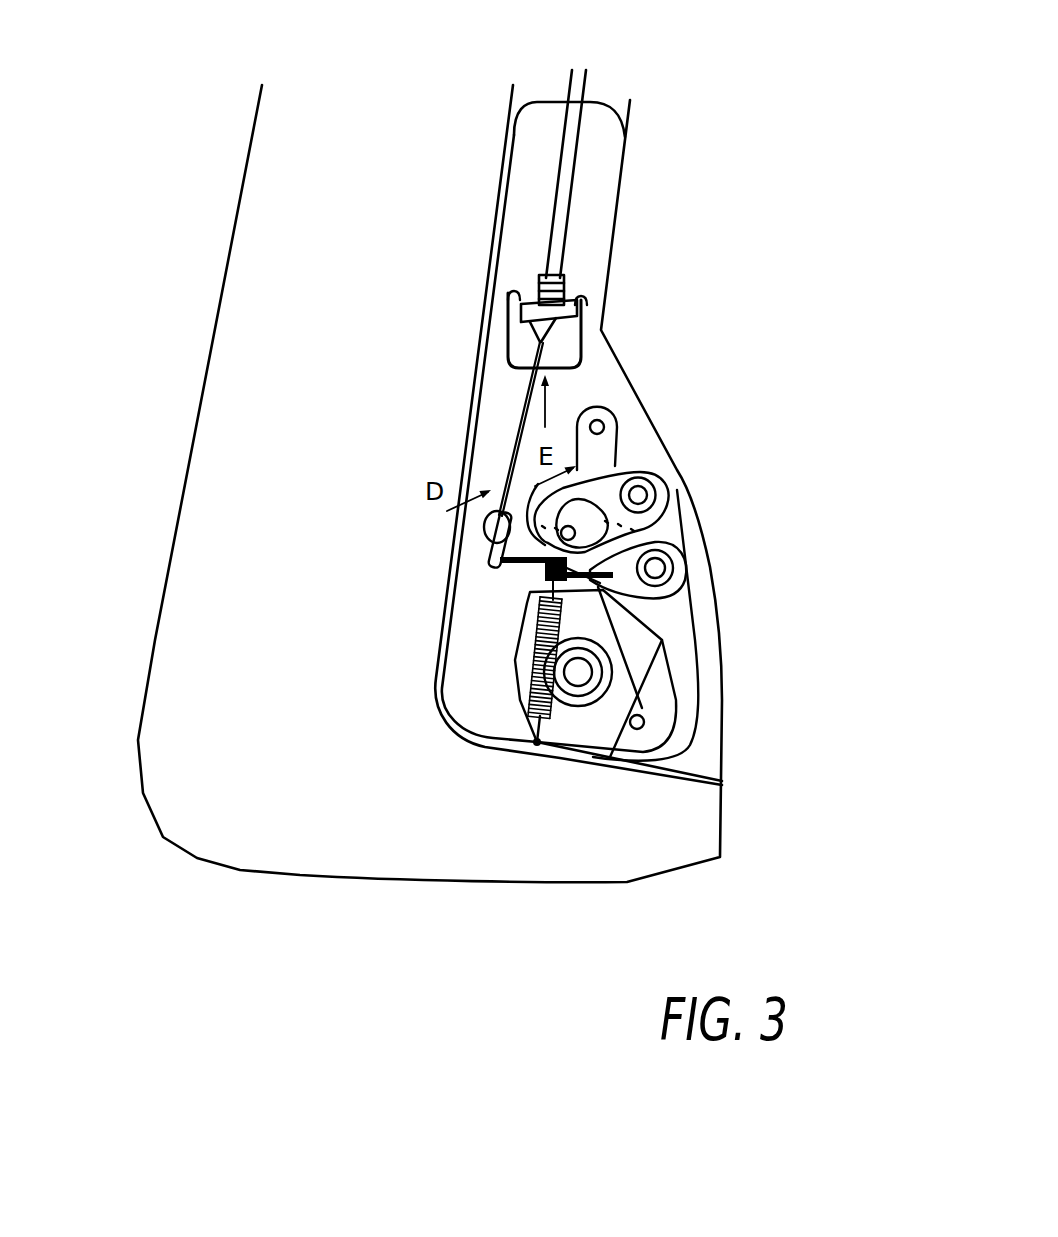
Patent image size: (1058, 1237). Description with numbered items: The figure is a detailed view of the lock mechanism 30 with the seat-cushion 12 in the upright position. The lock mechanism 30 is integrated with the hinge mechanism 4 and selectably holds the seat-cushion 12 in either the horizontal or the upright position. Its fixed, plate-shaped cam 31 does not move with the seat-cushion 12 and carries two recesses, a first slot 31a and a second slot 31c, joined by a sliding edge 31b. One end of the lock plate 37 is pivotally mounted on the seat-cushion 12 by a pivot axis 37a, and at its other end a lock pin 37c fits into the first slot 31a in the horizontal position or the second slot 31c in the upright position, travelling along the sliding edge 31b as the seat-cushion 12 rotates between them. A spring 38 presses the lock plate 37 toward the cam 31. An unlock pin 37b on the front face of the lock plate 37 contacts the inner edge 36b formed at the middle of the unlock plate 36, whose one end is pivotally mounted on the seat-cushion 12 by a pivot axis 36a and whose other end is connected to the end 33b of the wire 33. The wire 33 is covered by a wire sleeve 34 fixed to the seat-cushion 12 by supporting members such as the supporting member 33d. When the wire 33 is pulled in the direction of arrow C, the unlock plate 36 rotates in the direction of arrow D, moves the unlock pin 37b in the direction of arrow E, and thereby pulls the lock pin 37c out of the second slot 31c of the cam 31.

The hinge mechanism 4 is at (735, 388).
The seat-cushion 12 is at (237, 338).
The lock mechanism 30 is at (460, 245).
The cam 31 is at (530, 602).
The first slot 31a is at (648, 710).
The sliding edge 31b is at (665, 633).
The second slot 31c is at (547, 576).
The wire 33 is at (520, 396).
The end of the wire 33b is at (493, 562).
The supporting member 33d is at (587, 317).
The wire sleeve 34 is at (568, 163).
The unlock plate 36 is at (660, 510).
The pivot axis 36a is at (674, 478).
The inner edge 36b is at (608, 538).
The lock plate 37 is at (698, 606).
The pivot axis 37a is at (676, 578).
The unlock pin 37b is at (545, 540).
The lock pin 37c is at (665, 690).
The spring 38 is at (537, 742).